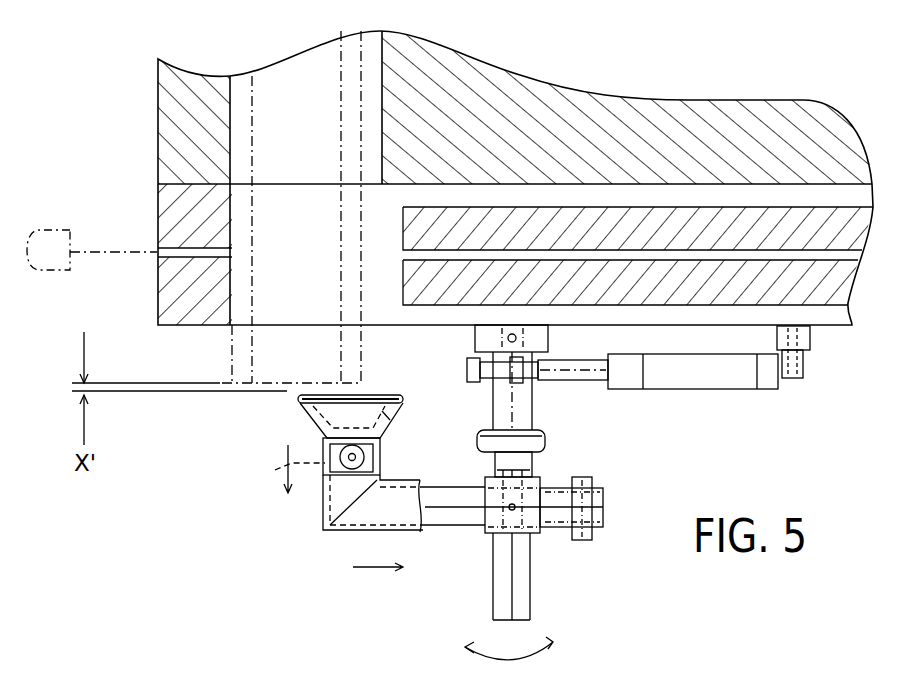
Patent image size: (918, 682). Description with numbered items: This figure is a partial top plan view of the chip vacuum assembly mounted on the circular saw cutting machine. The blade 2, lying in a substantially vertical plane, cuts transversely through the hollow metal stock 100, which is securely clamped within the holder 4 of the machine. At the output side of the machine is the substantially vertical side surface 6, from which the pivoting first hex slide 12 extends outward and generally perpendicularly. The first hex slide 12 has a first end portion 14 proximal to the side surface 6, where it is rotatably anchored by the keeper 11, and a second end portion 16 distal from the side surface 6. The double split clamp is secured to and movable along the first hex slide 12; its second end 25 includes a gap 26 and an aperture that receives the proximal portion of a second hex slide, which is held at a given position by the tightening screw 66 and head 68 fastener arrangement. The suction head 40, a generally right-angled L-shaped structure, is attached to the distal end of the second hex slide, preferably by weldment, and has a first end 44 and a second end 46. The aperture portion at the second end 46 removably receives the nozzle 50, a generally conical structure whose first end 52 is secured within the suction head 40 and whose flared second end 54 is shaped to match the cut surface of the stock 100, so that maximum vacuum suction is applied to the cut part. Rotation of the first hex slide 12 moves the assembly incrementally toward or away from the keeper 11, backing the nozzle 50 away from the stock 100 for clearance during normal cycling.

The hollow metal stock 100 is at (291, 78).
The holder 4 is at (173, 122).
The blade 2 is at (107, 250).
The keeper 11 is at (540, 333).
The side surface 6 is at (666, 323).
The nozzle 50 is at (300, 407).
The flared second end 54 is at (390, 420).
The second end 46 is at (323, 455).
The first end 52 is at (282, 472).
The suction head 40 is at (340, 498).
The first end 44 is at (383, 520).
The head 68 is at (484, 440).
The first end portion 14 is at (528, 400).
The second end 25 is at (541, 485).
The gap 26 is at (491, 506).
The first hex slide 12 is at (500, 552).
The tightening screw 66 is at (514, 515).
The second end portion 16 is at (526, 601).